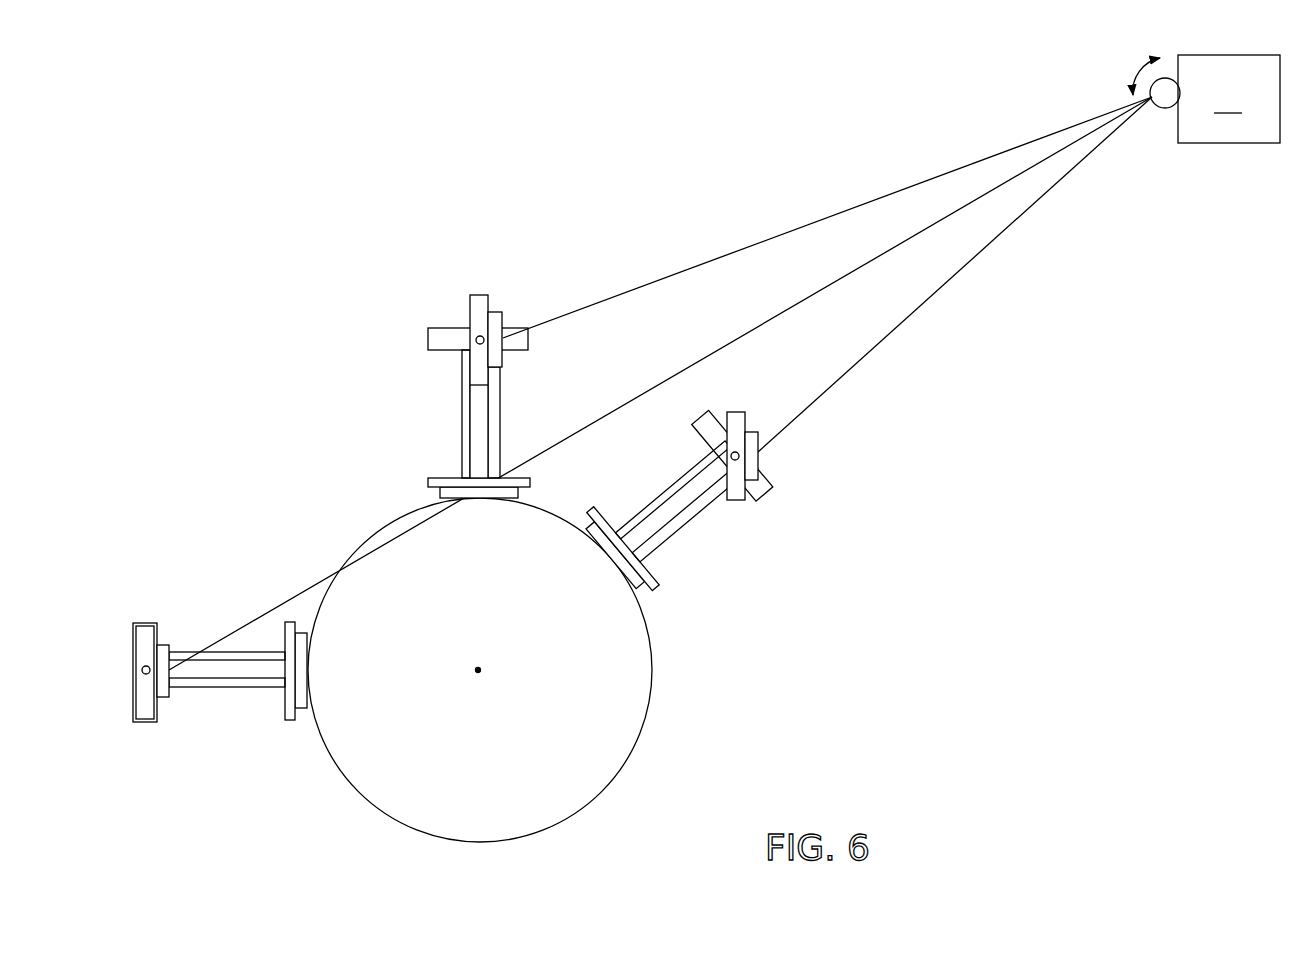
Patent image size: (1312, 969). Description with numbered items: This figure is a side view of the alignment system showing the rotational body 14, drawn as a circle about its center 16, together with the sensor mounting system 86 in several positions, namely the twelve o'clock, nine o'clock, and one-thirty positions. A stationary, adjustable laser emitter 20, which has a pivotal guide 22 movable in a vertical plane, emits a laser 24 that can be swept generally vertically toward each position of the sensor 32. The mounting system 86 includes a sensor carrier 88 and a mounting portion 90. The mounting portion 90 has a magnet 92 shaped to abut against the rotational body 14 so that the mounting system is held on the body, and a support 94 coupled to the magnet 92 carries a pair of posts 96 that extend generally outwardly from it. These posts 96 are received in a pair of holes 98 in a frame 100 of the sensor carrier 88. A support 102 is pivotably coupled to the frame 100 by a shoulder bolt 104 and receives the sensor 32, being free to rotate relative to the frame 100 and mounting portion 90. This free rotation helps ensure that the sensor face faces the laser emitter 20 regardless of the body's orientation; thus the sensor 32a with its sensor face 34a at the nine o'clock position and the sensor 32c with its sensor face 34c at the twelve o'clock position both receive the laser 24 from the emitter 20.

The rotational body 14 is at (573, 807).
The center of object 16 is at (481, 671).
The laser emitter 20 is at (1229, 99).
The pivotal guide 22 is at (1163, 108).
The laser 24 is at (905, 188).
The sensor 32 is at (757, 462).
The sensor 32a is at (160, 645).
The sensor 32c is at (500, 307).
The sensor face 34a is at (170, 678).
The sensor face 34c is at (503, 338).
The mounting system 86 is at (403, 388).
The sensor carrier 88 is at (403, 322).
The mounting portion 90 is at (390, 450).
The magnet 92 is at (440, 490).
The support 94 is at (527, 487).
The posts 96 is at (497, 427).
The holes 98 is at (463, 357).
The frame 100 is at (445, 333).
The support 102 is at (478, 296).
The shoulder bolt 104 is at (483, 342).